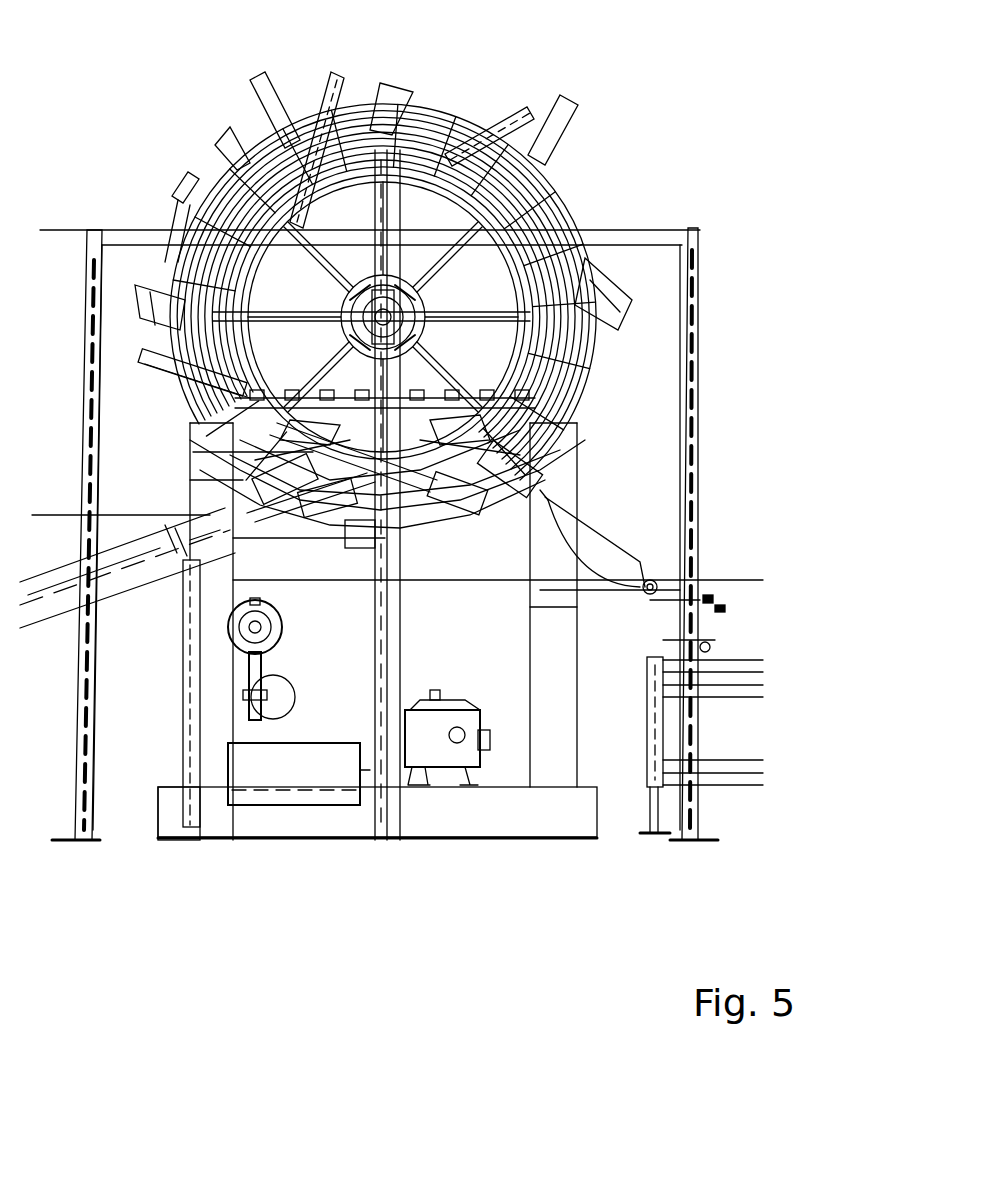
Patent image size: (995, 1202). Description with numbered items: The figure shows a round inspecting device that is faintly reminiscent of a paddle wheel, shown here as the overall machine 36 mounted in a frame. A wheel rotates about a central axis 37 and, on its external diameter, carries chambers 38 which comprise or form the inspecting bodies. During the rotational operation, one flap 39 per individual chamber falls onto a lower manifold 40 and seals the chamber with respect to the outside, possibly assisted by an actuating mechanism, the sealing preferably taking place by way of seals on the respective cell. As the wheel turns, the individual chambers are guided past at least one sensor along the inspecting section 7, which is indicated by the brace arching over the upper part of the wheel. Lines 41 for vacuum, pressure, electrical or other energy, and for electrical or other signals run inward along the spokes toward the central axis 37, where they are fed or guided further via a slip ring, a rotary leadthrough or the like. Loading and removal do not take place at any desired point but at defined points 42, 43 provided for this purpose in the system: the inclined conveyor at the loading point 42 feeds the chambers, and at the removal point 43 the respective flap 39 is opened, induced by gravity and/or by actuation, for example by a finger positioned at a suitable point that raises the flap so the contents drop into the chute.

The inspecting section 7 is at (197, 146).
The machine 36 is at (130, 168).
The central axis 37 is at (417, 297).
The chambers 38 is at (624, 293).
The flap 39 is at (163, 323).
The lower manifold 40 is at (148, 357).
The lines 41 is at (285, 312).
The loading point 42 is at (174, 507).
The removal point 43 is at (652, 547).